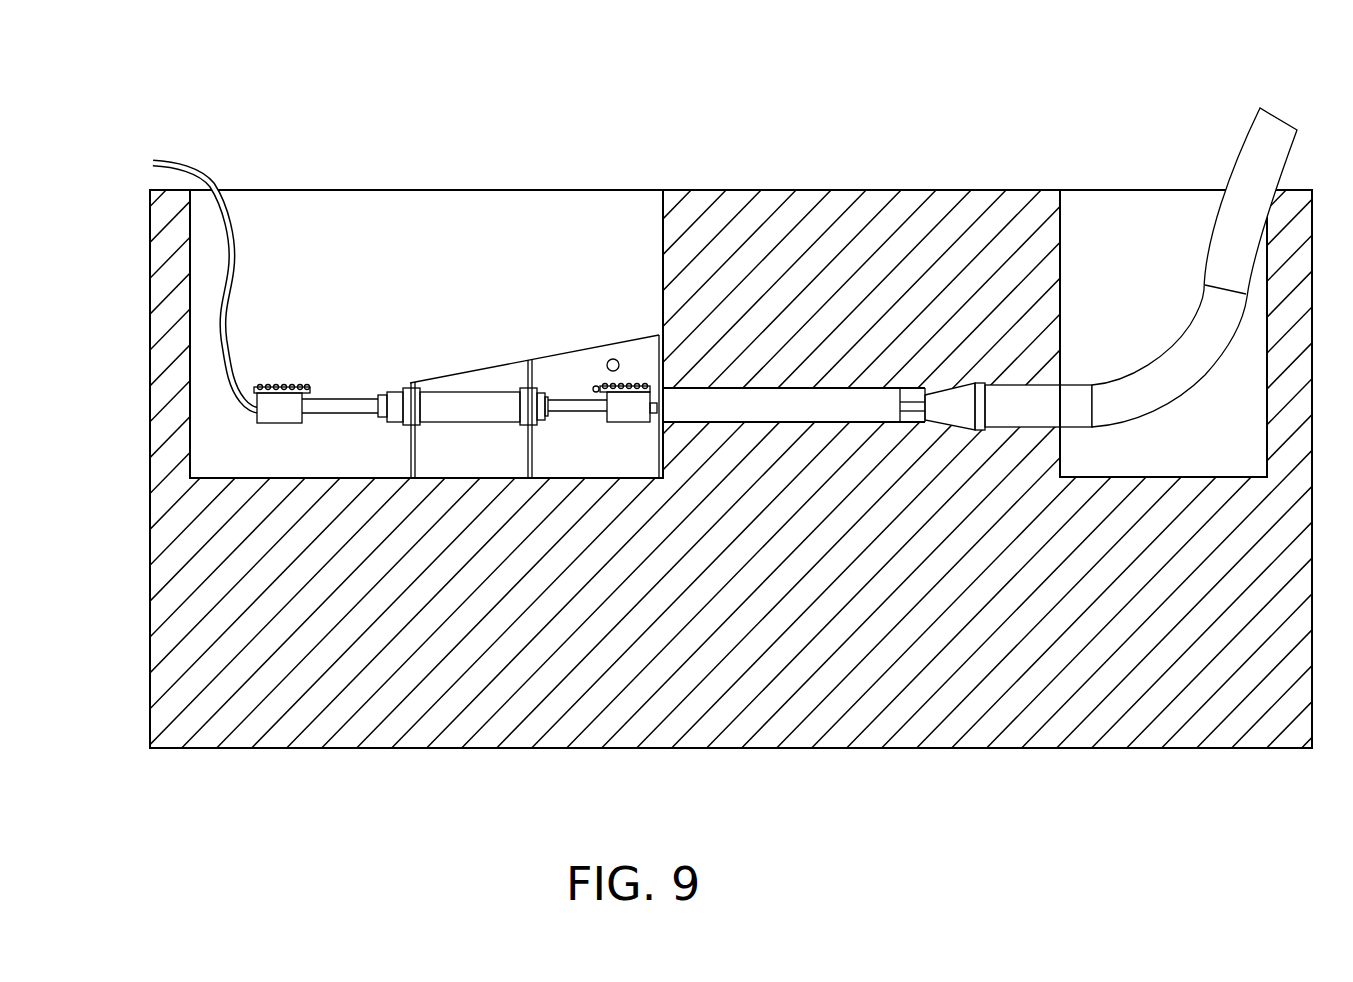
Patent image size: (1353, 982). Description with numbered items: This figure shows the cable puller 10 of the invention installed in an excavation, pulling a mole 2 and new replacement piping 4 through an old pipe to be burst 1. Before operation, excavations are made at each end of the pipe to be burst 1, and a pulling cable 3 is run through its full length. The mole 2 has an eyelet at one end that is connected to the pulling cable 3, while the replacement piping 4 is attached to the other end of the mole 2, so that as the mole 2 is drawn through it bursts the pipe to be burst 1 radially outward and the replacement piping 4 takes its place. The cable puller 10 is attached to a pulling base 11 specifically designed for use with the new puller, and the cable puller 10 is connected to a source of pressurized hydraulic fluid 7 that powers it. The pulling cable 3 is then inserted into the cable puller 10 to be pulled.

The pipe to be burst 1 is at (794, 405).
The mole 2 is at (930, 405).
The pulling cable 3 is at (653, 418).
The replacement piping 4 is at (1248, 120).
The source of pressurized hydraulic fluid 7 is at (284, 386).
The cable puller 10 is at (451, 383).
The pulling base 11 is at (575, 347).